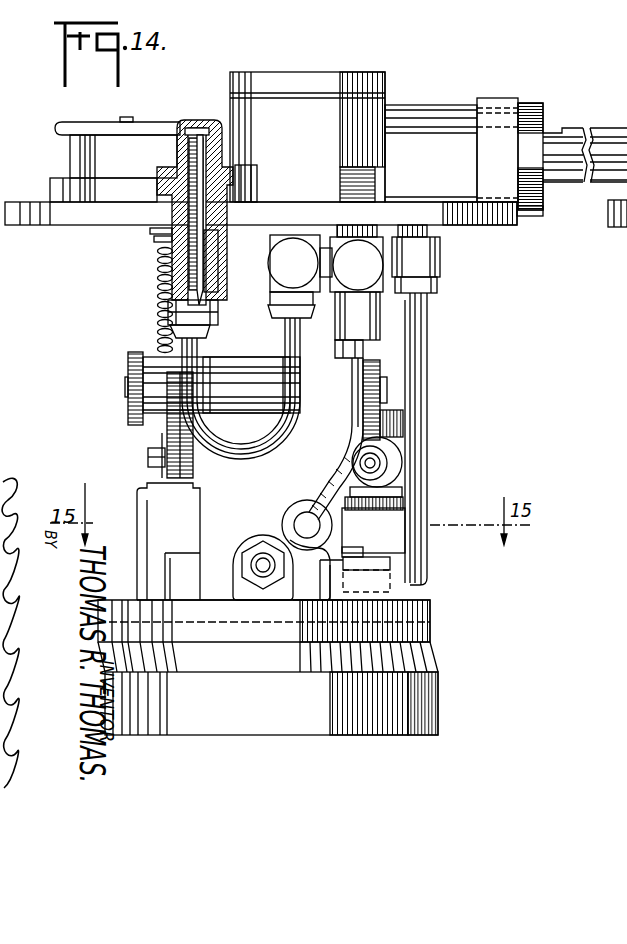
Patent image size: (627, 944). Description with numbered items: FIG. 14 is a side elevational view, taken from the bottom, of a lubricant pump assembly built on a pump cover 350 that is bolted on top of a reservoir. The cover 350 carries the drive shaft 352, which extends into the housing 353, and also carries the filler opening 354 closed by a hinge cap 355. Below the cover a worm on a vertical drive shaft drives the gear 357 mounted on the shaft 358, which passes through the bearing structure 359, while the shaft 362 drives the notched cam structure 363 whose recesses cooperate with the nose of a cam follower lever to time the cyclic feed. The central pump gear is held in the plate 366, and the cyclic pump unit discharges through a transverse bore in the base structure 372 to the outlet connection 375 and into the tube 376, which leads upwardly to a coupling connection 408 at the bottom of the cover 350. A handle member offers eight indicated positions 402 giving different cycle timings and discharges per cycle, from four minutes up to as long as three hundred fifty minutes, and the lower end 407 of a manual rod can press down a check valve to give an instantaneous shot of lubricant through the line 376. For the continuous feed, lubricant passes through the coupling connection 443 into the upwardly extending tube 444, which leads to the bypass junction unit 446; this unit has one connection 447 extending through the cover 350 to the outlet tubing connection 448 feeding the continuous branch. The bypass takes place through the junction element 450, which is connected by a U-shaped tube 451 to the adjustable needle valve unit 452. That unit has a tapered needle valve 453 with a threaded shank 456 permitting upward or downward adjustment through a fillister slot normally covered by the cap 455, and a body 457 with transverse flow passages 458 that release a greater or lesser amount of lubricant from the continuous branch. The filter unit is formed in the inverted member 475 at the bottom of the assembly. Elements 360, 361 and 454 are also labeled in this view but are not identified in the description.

The pump cover 350 is at (503, 227).
The drive shaft 352 is at (597, 142).
The housing 353 is at (360, 117).
The filler opening 354 is at (82, 147).
The hinge cap 355 is at (68, 123).
The gear 357 is at (355, 526).
The shaft 358 is at (392, 464).
The bearing structure 359 is at (395, 446).
The bracket 360 is at (402, 490).
The gear 361 is at (380, 364).
The shaft 362 is at (388, 392).
The notched cam structure 363 is at (135, 430).
The plate 366 is at (435, 636).
The base structure 372 is at (148, 538).
The outlet connection 375 is at (393, 589).
The tube 376 is at (425, 421).
The indicated positions 402 is at (128, 357).
The lower end of the rod 407 is at (356, 297).
The coupling connection 408 is at (440, 260).
The coupling connection 443 is at (283, 525).
The upwardly extending tube 444 is at (322, 483).
The bypass junction unit 446 is at (382, 318).
The connection 447 is at (367, 225).
The outlet tubing connection 448 is at (383, 163).
The junction element 450 is at (291, 250).
The U-shaped tube 451 is at (226, 460).
The adjustable needle valve unit 452 is at (168, 305).
The tapered needle valve 453 is at (158, 270).
The adjusting screw 454 is at (193, 137).
The cap 455 is at (175, 167).
The threaded shank 456 is at (223, 157).
The body 457 is at (213, 278).
The transverse flow passages 458 is at (158, 242).
The inverted member 475 is at (440, 688).